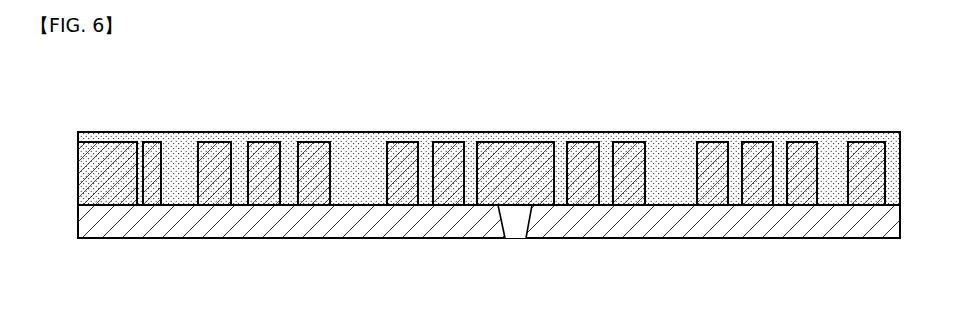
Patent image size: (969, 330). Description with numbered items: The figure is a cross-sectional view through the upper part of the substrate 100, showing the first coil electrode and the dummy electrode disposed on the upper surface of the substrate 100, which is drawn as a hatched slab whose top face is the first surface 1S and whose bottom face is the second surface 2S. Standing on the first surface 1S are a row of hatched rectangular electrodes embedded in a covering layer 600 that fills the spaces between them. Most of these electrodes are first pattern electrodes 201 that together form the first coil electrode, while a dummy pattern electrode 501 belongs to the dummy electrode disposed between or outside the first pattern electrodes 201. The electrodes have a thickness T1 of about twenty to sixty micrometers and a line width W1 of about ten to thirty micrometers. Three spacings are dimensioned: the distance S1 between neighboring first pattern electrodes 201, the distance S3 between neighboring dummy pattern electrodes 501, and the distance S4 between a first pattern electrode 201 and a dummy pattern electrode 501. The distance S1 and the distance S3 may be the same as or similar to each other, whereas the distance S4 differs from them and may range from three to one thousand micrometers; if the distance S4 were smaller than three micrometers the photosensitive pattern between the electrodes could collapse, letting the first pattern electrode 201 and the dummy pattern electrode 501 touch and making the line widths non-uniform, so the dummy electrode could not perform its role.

The solder resist layer 600 is at (362, 141).
The 3-1 pattern electrode 501 is at (404, 150).
The first pattern electrode 201 is at (758, 150).
The substrate 100 is at (900, 220).
The first surface of substrate 1S is at (898, 204).
The second surface of substrate 2S is at (878, 239).
The thickness of the first coil electrode T1 is at (76, 205).
The distance between the first pattern electrodes S1 is at (231, 205).
The line width of the first coil electrode W1 is at (298, 205).
The distance between the 3-1 pattern electrodes S3 is at (418, 205).
The distance between the first pattern electrode and the 3-1 pattern electrode S4 is at (645, 205).